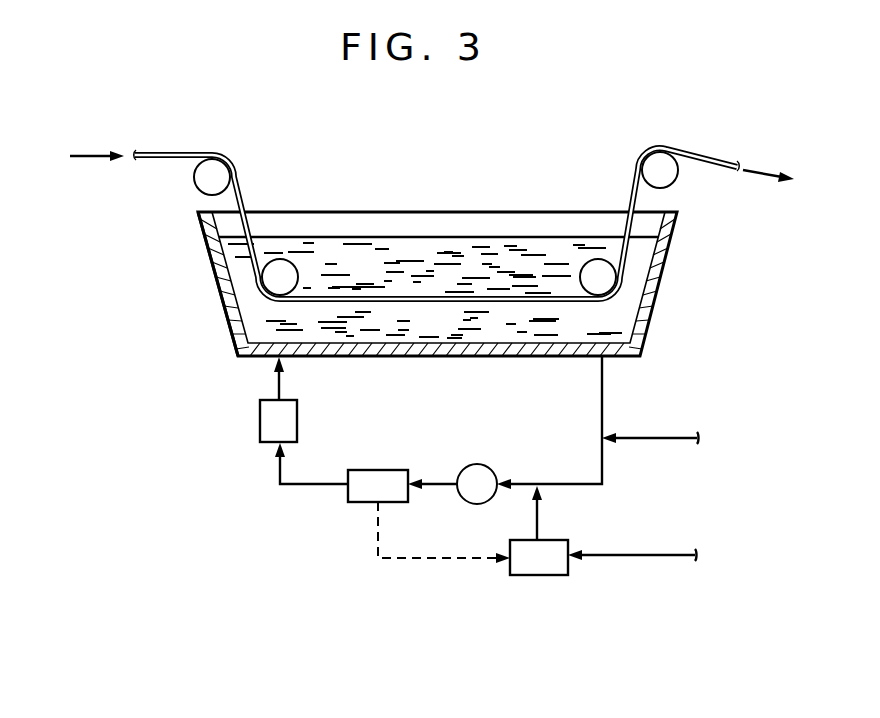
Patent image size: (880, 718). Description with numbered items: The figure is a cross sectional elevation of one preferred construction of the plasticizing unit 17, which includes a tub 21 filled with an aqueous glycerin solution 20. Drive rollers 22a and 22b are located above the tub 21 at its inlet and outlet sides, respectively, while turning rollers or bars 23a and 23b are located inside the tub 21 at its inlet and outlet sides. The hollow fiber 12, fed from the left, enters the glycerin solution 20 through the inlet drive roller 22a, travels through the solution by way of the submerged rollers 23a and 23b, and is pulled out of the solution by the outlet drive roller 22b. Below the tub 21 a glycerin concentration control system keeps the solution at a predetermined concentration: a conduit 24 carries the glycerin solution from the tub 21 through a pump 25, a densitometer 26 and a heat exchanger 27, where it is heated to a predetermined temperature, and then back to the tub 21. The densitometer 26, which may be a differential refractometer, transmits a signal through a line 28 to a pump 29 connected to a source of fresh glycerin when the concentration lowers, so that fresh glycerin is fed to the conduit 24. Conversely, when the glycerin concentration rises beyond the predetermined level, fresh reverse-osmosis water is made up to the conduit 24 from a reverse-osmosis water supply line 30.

The hollow fiber 12 is at (448, 297).
The plasticizing unit 17 is at (200, 110).
The aqueous glycerin solution 20 is at (643, 303).
The tub 21 is at (222, 292).
The inlet drive roller 22a is at (197, 178).
The outlet drive roller 22b is at (662, 160).
The inlet turning roller 23a is at (282, 268).
The outlet turning roller 23b is at (597, 267).
The conduit 24 is at (603, 395).
The pump 25 is at (475, 478).
The densitometer 26 is at (382, 470).
The heat exchanger 27 is at (265, 420).
The line 28 is at (377, 525).
The pump 29 is at (538, 572).
The reverse-osmosis water supply line 30 is at (670, 440).